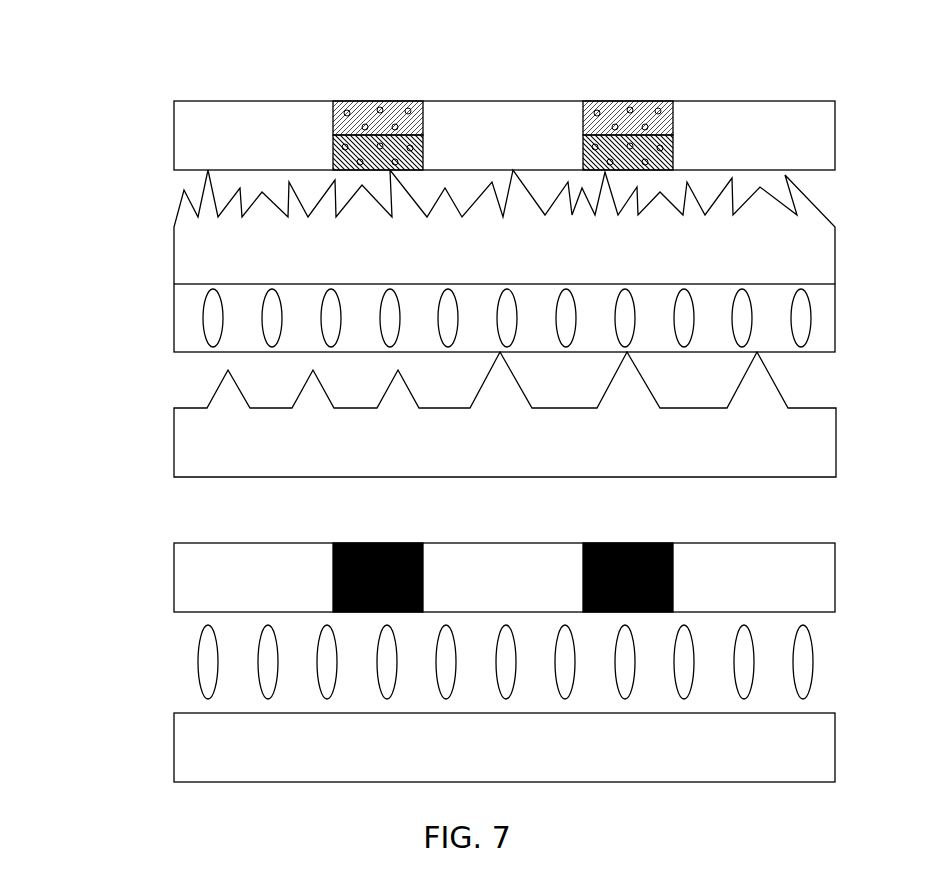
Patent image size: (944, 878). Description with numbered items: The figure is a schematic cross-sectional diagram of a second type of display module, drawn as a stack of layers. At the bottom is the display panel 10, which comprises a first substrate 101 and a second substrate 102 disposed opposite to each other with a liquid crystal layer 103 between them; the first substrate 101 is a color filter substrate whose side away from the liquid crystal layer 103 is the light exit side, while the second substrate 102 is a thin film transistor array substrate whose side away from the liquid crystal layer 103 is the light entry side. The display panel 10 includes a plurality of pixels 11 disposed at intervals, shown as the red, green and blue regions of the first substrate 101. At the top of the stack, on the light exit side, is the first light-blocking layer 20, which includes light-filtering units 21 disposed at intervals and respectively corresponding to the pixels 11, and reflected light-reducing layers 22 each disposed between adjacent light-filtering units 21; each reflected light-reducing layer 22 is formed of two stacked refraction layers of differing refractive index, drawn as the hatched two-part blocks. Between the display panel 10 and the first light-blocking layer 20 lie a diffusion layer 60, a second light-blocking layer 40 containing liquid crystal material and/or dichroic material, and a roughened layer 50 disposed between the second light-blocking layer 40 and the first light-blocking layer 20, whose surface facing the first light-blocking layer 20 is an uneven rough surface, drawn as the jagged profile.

The display panel 10 is at (464, 636).
The pixels 11 is at (290, 568).
The first light-blocking layer 20 is at (173, 130).
The light-filtering units 21 is at (290, 125).
The reflected light-reducing layers 22 is at (380, 101).
The second light-blocking layer 40 is at (173, 312).
The roughened layer 50 is at (173, 245).
The diffusion layer 60 is at (173, 435).
The first substrate 101 is at (197, 582).
The second substrate 102 is at (455, 747).
The liquid crystal layer 103 is at (205, 662).